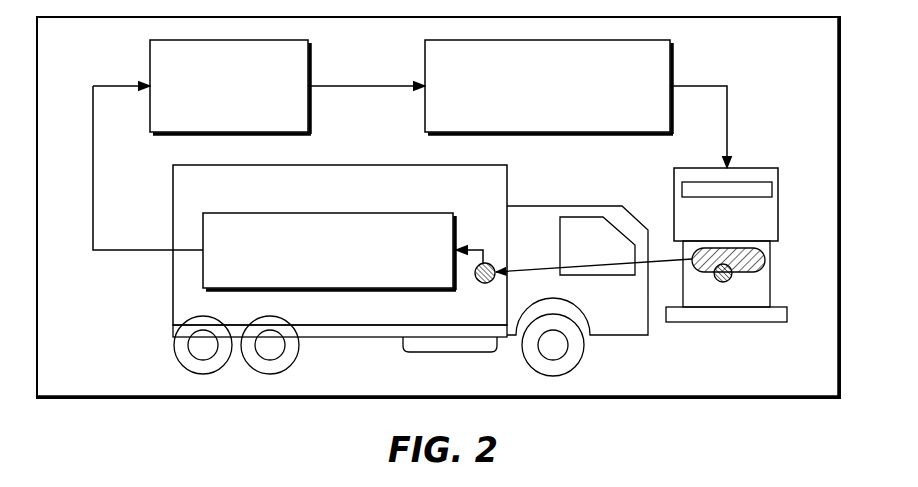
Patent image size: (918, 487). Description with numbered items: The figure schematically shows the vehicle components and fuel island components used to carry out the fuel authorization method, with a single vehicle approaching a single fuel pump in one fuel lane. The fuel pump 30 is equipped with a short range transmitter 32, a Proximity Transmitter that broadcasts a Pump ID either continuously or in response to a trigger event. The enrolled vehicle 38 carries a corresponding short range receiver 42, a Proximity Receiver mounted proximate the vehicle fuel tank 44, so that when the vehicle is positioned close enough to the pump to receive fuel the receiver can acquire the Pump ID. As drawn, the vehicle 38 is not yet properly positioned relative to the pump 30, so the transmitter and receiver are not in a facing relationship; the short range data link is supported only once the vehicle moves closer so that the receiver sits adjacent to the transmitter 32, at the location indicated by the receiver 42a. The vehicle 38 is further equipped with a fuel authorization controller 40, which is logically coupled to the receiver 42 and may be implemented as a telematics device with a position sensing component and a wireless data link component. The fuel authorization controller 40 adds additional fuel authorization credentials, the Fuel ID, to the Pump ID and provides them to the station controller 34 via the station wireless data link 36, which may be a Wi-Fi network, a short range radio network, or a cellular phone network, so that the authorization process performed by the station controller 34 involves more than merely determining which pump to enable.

The fuel pump 30 is at (775, 197).
The short range transmitter 32 is at (766, 259).
The station controller 34 is at (675, 73).
The station wireless data link 36 is at (310, 68).
The enrolled vehicle 38 is at (318, 165).
The fuel authorization controller 40 is at (240, 213).
The short range receiver 42 is at (478, 282).
The receiver 42a is at (718, 281).
The vehicle fuel tank 44 is at (405, 343).